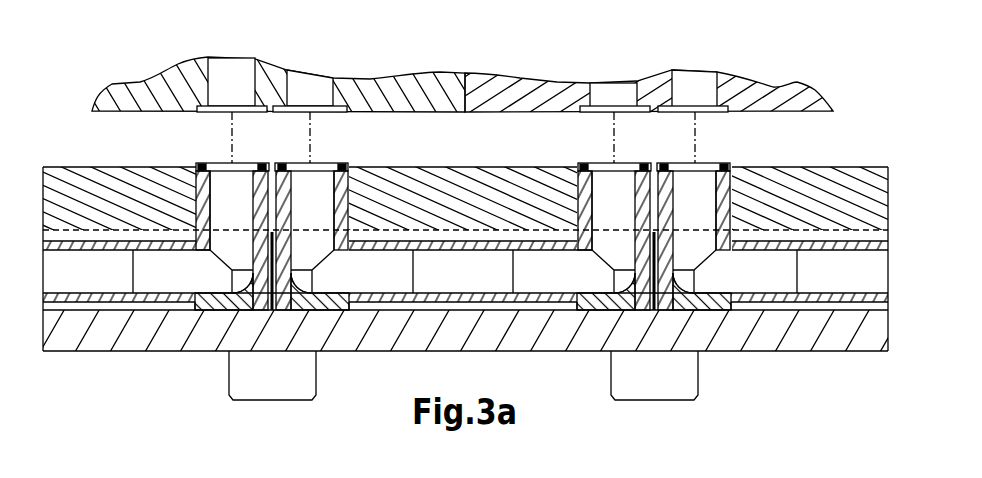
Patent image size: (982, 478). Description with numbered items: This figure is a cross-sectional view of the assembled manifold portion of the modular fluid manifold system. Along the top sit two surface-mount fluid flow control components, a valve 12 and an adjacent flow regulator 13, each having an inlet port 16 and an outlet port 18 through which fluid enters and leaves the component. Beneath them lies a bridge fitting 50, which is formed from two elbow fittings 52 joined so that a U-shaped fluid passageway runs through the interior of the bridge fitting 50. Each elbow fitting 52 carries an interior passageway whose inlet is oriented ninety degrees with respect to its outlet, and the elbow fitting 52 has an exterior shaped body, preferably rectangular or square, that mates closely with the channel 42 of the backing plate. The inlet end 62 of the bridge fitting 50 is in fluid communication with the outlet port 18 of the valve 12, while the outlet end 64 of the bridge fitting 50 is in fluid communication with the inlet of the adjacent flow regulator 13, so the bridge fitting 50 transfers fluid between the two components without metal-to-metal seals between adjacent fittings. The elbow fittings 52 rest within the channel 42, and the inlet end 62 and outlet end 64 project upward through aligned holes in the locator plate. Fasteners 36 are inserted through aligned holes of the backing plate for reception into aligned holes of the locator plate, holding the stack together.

The valve 12 is at (388, 95).
The flow regulator 13 is at (500, 97).
The inlet port 16 is at (612, 90).
The outlet port 18 is at (687, 87).
The fastener 36 is at (682, 379).
The channel 42 is at (42, 233).
The bridge fitting 50 is at (820, 290).
The elbow fitting 52 is at (650, 440).
The inlet end 62 is at (697, 165).
The outlet end 64 is at (603, 165).